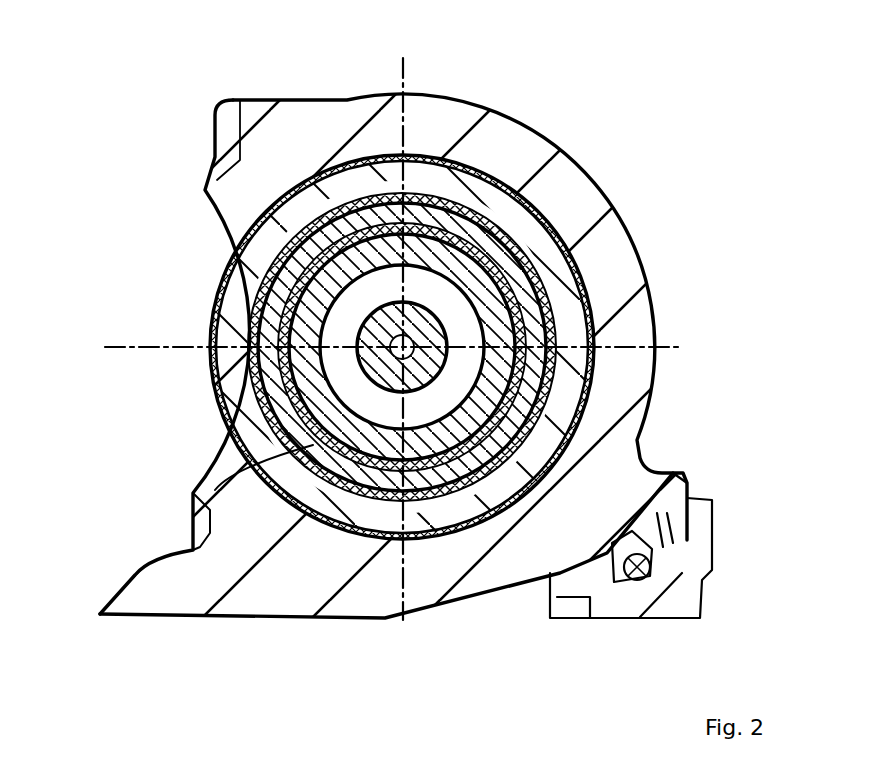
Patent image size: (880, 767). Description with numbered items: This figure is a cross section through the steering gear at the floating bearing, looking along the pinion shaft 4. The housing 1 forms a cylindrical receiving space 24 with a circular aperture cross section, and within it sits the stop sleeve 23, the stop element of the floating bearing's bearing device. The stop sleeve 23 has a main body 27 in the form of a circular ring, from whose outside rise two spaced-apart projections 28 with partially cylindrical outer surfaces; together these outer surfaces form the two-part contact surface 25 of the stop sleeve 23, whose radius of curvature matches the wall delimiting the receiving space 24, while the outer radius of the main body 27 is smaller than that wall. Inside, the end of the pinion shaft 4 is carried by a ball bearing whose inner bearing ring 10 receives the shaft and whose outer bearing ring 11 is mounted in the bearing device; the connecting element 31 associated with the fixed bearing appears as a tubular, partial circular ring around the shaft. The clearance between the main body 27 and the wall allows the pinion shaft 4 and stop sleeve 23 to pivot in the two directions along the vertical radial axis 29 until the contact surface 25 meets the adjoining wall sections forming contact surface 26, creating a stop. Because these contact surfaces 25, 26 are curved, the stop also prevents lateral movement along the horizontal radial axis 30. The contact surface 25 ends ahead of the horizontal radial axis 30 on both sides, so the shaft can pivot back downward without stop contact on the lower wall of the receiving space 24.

The housing 1 is at (303, 120).
The pinion shaft 4 is at (225, 425).
The inner bearing ring 10 is at (333, 360).
The outer bearing ring 11 is at (193, 497).
The stop sleeve 23 is at (575, 375).
The receiving space 24 is at (355, 540).
The contact surface of the stop sleeve 25 is at (243, 243).
The contact surface of the wall of the receiving space 26 is at (553, 228).
The main body 27 is at (550, 425).
The projections 28 is at (222, 288).
The vertical radial axis 29 is at (410, 52).
The horizontal radial axis 30 is at (683, 347).
The connecting element 31 is at (262, 330).